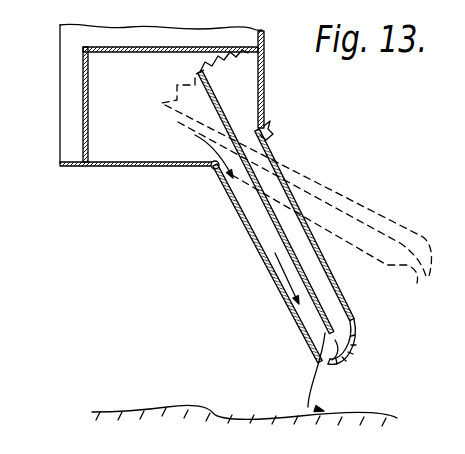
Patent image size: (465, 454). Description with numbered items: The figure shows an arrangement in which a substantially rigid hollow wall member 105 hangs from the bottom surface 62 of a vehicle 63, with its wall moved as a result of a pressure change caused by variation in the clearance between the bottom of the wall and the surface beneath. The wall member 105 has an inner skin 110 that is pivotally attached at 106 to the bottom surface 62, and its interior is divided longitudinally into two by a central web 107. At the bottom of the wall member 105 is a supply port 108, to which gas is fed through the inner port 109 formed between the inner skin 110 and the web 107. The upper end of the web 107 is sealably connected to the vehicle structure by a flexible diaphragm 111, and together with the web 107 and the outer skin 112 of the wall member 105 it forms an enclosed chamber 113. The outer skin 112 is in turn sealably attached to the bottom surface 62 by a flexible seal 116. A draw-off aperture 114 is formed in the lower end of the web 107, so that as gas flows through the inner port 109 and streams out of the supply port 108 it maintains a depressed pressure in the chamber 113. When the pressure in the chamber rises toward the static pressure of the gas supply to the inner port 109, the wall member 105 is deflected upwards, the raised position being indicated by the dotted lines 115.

The bottom surface 62 is at (152, 166).
The vehicle 63 is at (247, 36).
The hollow wall member 105 is at (353, 318).
The pivotal attachment 106 is at (212, 170).
The central web 107 is at (280, 238).
The supply port 108 is at (322, 382).
The inner port 109 is at (277, 278).
The inner skin 110 is at (307, 334).
The flexible diaphragm 111 is at (247, 53).
The outer skin 112 is at (274, 168).
The enclosed chamber 113 is at (245, 112).
The draw-off aperture 114 is at (336, 342).
The dotted lines 115 is at (387, 233).
The flexible seal 116 is at (271, 129).